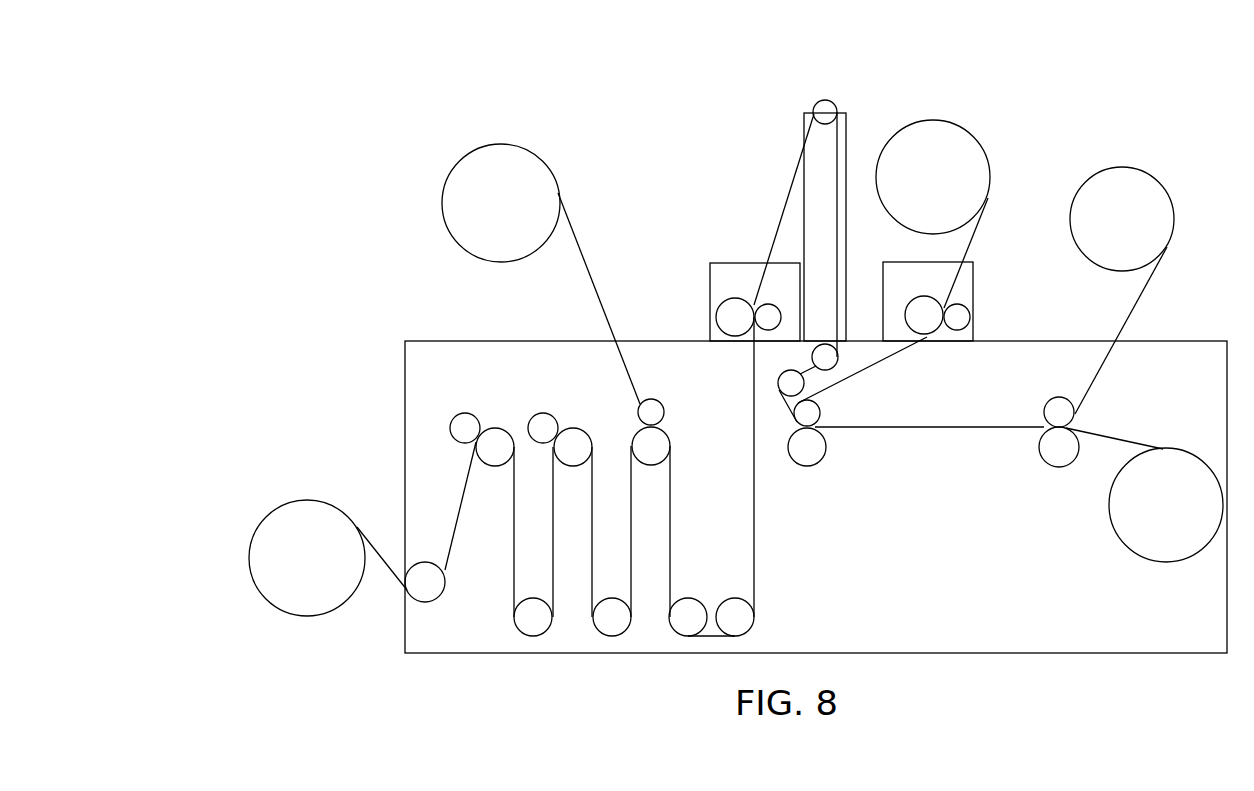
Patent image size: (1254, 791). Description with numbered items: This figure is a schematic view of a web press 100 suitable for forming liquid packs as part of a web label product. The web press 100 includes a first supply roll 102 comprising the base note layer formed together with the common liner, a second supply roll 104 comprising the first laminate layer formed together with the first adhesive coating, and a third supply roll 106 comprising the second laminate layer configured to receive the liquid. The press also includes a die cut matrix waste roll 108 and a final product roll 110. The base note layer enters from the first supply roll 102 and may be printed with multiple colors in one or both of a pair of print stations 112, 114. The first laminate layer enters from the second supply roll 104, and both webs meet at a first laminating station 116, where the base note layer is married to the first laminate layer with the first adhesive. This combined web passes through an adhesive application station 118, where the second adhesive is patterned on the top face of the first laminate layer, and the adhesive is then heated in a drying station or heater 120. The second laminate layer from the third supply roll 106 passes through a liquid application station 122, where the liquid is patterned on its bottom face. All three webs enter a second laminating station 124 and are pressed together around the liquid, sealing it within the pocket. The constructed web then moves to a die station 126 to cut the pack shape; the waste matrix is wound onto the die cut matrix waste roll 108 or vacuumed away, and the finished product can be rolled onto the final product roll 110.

The web press 100 is at (378, 130).
The first supply roll 102 is at (300, 502).
The second supply roll 104 is at (445, 190).
The third supply roll 106 is at (990, 160).
The die cut matrix waste roll 108 is at (1175, 207).
The final product roll 110 is at (1118, 543).
The print station 112 is at (492, 415).
The print station 114 is at (568, 412).
The first laminating station 116 is at (683, 422).
The adhesive application station 118 is at (727, 292).
The drying station or heater 120 is at (824, 155).
The liquid application station 122 is at (958, 295).
The second laminating station 124 is at (779, 426).
The die station 126 is at (1027, 440).